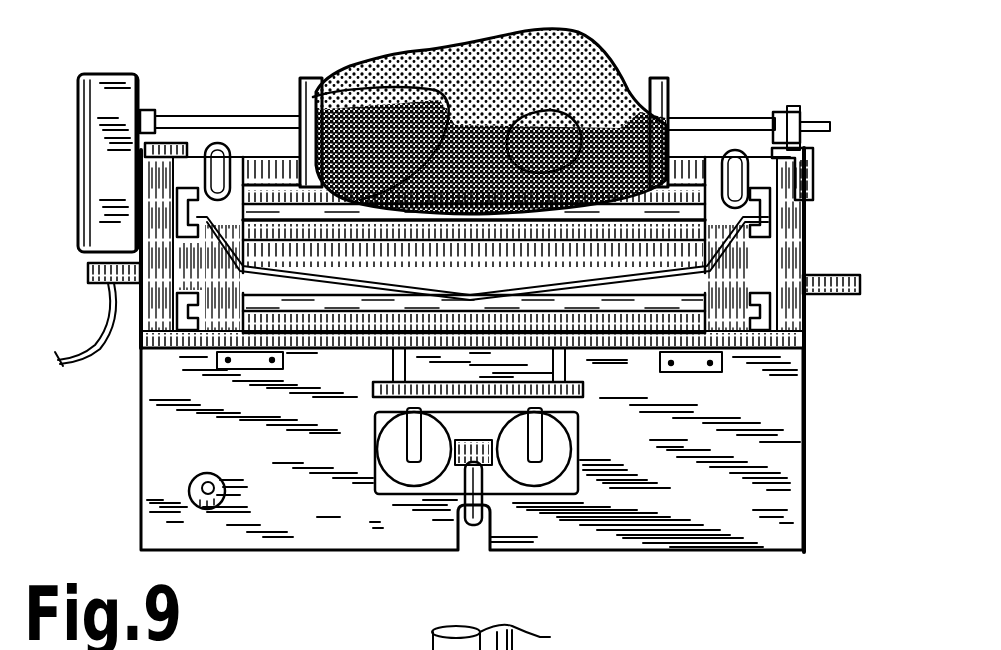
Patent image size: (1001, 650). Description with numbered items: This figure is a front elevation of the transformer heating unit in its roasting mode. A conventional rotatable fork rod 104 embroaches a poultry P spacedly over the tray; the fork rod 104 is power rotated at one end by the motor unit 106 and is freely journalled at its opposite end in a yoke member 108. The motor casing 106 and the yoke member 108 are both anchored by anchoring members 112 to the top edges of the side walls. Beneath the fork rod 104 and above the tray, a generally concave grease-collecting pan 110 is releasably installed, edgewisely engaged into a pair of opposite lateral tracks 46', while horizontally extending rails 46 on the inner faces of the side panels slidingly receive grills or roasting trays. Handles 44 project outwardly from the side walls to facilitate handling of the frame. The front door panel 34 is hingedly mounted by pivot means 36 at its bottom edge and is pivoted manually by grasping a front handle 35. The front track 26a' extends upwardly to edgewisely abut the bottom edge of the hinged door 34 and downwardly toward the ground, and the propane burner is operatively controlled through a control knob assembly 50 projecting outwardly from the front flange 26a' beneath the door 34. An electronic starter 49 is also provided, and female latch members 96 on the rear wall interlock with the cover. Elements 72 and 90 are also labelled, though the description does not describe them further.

The front track 26a' is at (515, 449).
The front door panel 34 is at (833, 345).
The pivot means 36 is at (723, 367).
The rails 46 is at (400, 220).
The lateral tracks 46' is at (510, 180).
The female latch members 96 is at (222, 145).
The grease-collecting pan 110 is at (727, 258).
The anchoring members 112 is at (160, 143).
The fork rod 104 is at (300, 80).
The yoke member 108 is at (792, 113).
The motor unit 106 is at (113, 100).
The handles 44 is at (88, 278).
The front handle 35 is at (585, 380).
The control knob assembly 50 is at (527, 510).
The electronic starter 49 is at (197, 477).
The poultry P is at (410, 73).
The pipe 72 is at (505, 632).
The element 90 is at (779, 632).